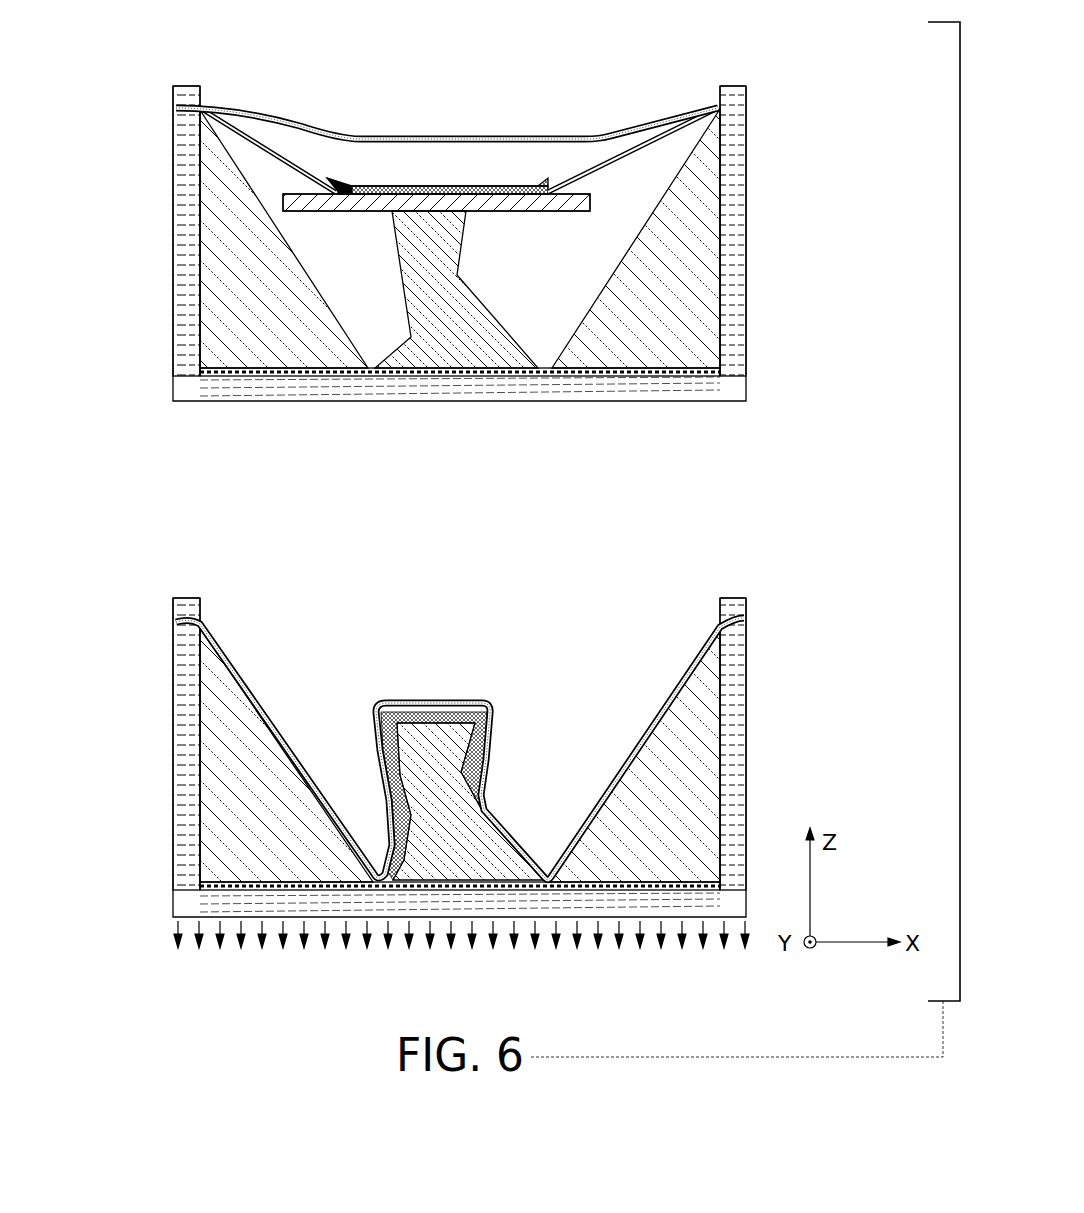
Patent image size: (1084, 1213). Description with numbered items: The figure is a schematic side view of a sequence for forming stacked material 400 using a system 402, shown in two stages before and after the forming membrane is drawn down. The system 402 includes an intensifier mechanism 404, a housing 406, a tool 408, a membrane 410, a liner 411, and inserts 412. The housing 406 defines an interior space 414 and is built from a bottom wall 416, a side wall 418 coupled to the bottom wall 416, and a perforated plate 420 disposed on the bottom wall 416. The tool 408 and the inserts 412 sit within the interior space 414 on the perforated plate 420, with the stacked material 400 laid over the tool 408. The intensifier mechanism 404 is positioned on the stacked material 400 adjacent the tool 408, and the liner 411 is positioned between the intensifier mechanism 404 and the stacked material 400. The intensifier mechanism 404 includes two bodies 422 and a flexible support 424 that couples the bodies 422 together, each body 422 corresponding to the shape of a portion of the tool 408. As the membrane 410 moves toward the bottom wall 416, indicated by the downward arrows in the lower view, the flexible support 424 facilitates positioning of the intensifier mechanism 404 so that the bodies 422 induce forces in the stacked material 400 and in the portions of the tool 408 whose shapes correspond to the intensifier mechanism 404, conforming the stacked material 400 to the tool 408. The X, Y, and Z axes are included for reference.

The stacked material 400 is at (575, 211).
The system 402 is at (132, 55).
The intensifier mechanism 404 is at (338, 180).
The housing 406 is at (178, 118).
The tool 408 is at (460, 312).
The membrane 410 is at (700, 118).
The liner 411 is at (250, 128).
The inserts 412 is at (325, 347).
The interior space 414 is at (637, 160).
The bottom wall 416 is at (690, 390).
The side wall 418 is at (178, 232).
The perforated plate 420 is at (706, 365).
The bodies 422 is at (330, 185).
The support 424 is at (440, 190).